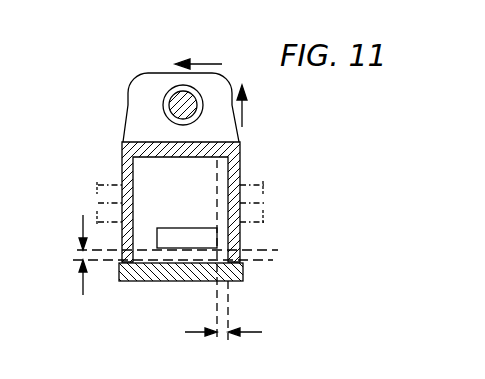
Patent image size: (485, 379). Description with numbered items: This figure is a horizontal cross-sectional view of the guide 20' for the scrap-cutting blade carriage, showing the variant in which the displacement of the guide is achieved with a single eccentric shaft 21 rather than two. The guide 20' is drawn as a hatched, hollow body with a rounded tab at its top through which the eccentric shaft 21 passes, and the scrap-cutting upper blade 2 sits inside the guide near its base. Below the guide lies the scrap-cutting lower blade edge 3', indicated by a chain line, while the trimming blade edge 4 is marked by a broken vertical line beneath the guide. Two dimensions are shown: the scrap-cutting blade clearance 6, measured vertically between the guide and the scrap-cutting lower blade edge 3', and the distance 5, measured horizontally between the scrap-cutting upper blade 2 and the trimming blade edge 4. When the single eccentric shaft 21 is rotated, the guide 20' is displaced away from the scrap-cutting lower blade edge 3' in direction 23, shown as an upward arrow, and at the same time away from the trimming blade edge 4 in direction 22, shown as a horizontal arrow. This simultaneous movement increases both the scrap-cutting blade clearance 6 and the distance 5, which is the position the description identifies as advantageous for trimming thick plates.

The guide of the scrap-cutting blade carriage 20' is at (192, 177).
The eccentric shaft 21 is at (192, 96).
The direction 22 is at (208, 62).
The direction 23 is at (243, 111).
The scrap-cutting upper blade 2 is at (198, 237).
The scrap-cutting lower blade edge 3' is at (193, 243).
The scrap-cutting blade clearance 6 is at (73, 255).
The trimming blade edge 4 is at (229, 295).
The distance 5 is at (222, 338).